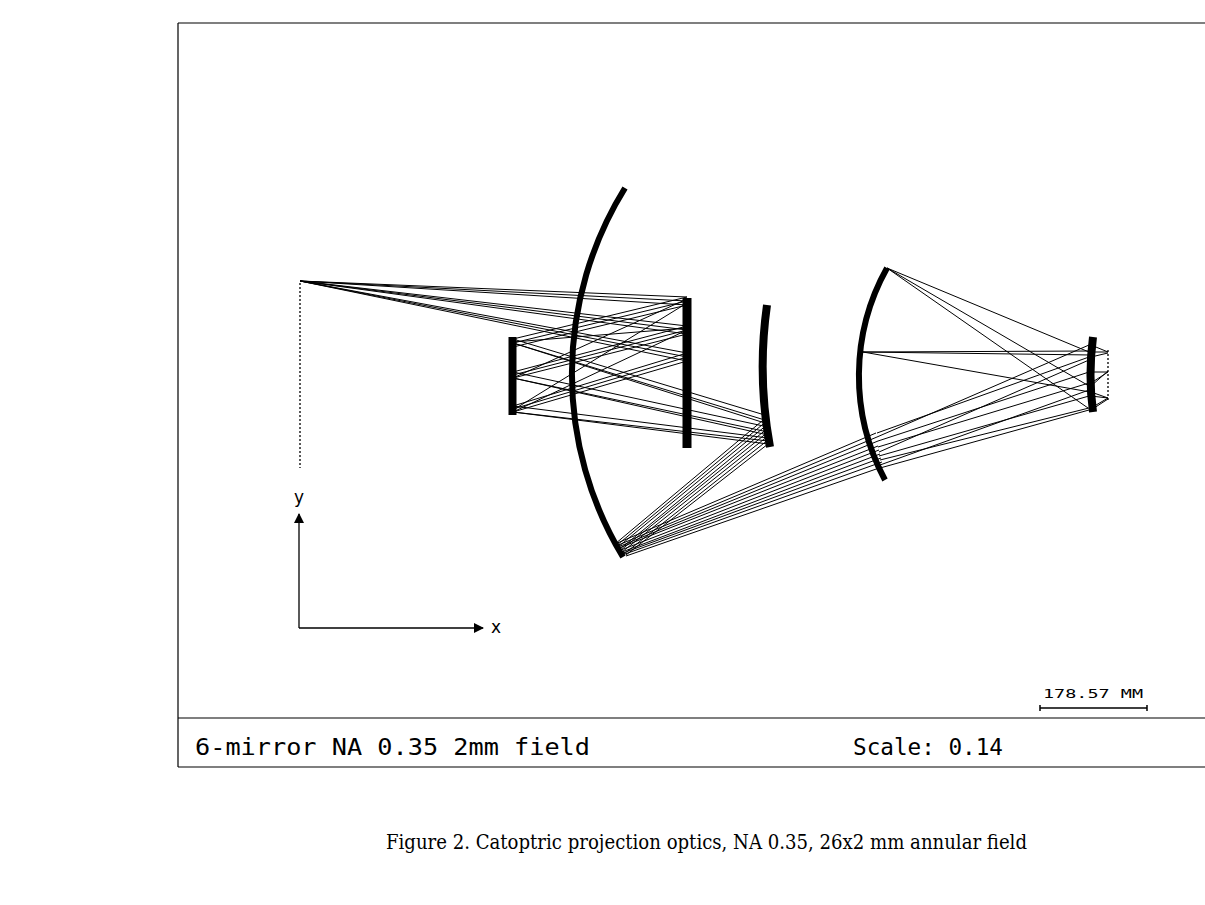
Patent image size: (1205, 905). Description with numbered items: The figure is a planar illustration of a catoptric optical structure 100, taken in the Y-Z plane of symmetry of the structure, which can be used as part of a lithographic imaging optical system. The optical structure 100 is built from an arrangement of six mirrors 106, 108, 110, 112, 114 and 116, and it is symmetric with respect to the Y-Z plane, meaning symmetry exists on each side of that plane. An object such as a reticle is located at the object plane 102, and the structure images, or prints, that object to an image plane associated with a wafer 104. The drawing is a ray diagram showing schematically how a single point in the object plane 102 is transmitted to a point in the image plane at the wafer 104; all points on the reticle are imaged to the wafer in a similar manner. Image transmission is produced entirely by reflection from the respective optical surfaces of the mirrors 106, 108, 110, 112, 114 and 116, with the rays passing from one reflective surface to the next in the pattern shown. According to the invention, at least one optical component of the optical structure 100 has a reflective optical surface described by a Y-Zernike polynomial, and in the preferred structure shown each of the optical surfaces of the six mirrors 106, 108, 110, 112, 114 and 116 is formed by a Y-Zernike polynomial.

The optical structure 100 is at (696, 194).
The object plane 102 is at (300, 281).
The wafer 104 is at (1110, 366).
The mirror 106 is at (514, 335).
The mirror 108 is at (624, 186).
The mirror 110 is at (688, 296).
The mirror 112 is at (771, 303).
The mirror 114 is at (888, 265).
The mirror 116 is at (1093, 335).